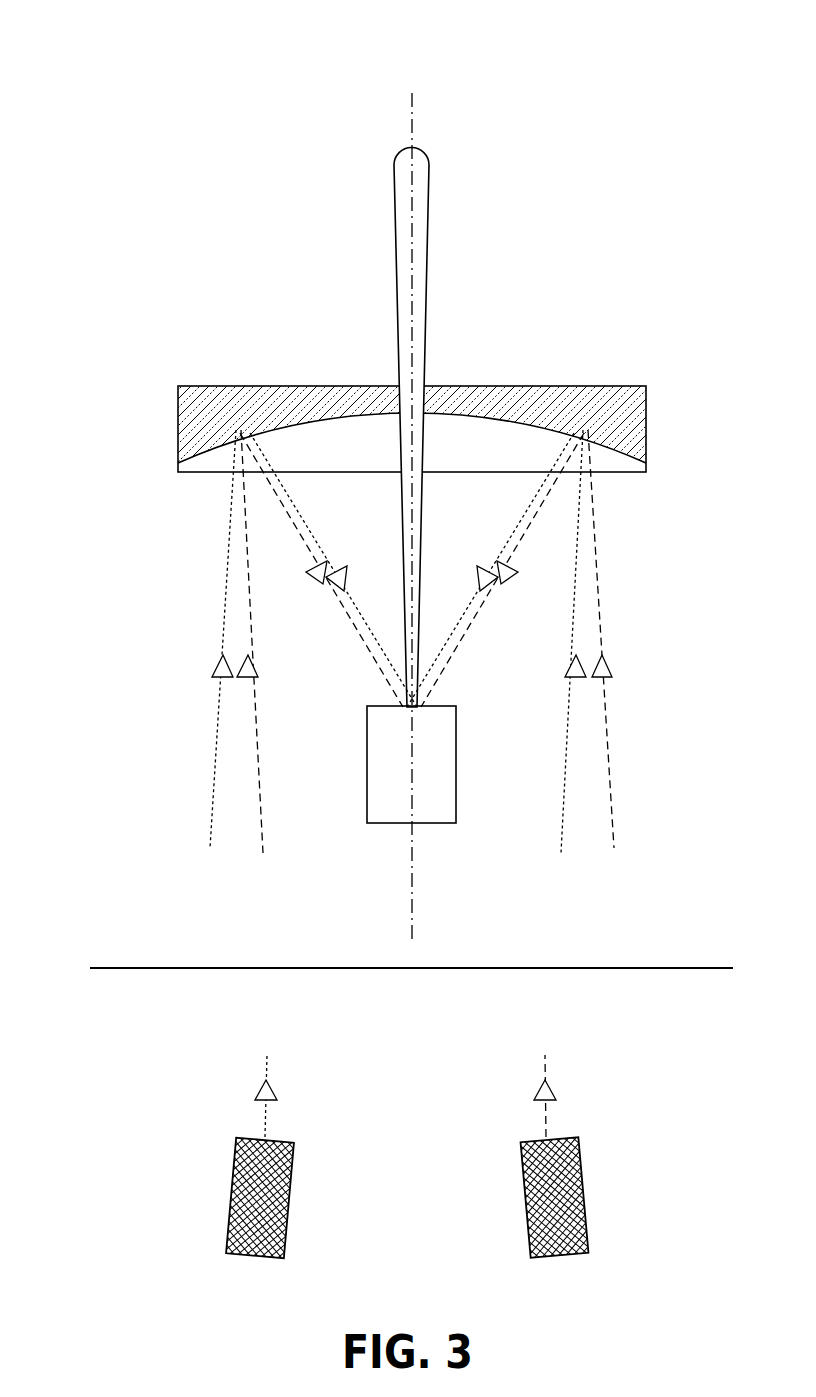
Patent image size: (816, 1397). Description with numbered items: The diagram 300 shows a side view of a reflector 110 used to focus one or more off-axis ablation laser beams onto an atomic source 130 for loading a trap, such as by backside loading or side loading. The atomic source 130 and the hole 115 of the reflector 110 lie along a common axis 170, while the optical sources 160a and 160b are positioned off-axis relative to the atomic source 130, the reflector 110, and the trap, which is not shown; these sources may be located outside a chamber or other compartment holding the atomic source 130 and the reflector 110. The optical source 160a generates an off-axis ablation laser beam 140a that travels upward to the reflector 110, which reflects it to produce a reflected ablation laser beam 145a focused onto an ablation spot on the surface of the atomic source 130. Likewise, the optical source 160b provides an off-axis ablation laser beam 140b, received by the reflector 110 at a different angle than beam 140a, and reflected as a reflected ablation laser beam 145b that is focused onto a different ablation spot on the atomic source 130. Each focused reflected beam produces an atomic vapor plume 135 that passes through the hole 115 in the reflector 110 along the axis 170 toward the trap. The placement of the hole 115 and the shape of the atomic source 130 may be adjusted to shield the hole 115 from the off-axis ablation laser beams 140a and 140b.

The diagram 300 is at (152, 36).
The reflector 110 is at (646, 405).
The hole 115 is at (416, 380).
The atomic source 130 is at (456, 823).
The atomic vapor plume 135 is at (430, 207).
The off-axis ablation laser beam 140a is at (217, 772).
The off-axis ablation laser beam 140b is at (607, 770).
The reflected ablation laser beam 145a is at (310, 533).
The reflected ablation laser beam 145b is at (517, 533).
The optical source 160a is at (230, 1188).
The optical source 160b is at (592, 1185).
The axis 170 is at (413, 114).